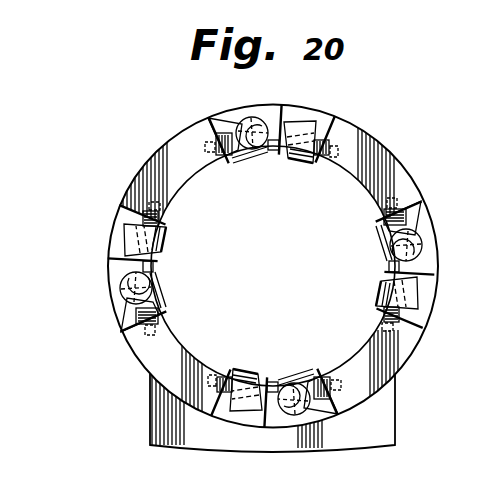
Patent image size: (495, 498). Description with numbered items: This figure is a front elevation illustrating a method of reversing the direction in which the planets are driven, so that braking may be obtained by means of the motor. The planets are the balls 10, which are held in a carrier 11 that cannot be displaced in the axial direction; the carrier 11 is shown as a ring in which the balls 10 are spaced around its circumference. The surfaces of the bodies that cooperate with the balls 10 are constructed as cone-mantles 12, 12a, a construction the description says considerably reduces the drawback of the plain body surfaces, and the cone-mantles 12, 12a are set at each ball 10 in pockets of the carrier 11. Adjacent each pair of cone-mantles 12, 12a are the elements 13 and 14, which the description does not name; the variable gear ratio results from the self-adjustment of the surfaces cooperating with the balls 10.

The balls 10 is at (259, 150).
The carrier 11 is at (402, 184).
The cone-mantle 12 is at (232, 124).
The cone-mantle 12a is at (312, 128).
The threaded stud 13 is at (227, 162).
The adjusting screw 14 is at (331, 160).